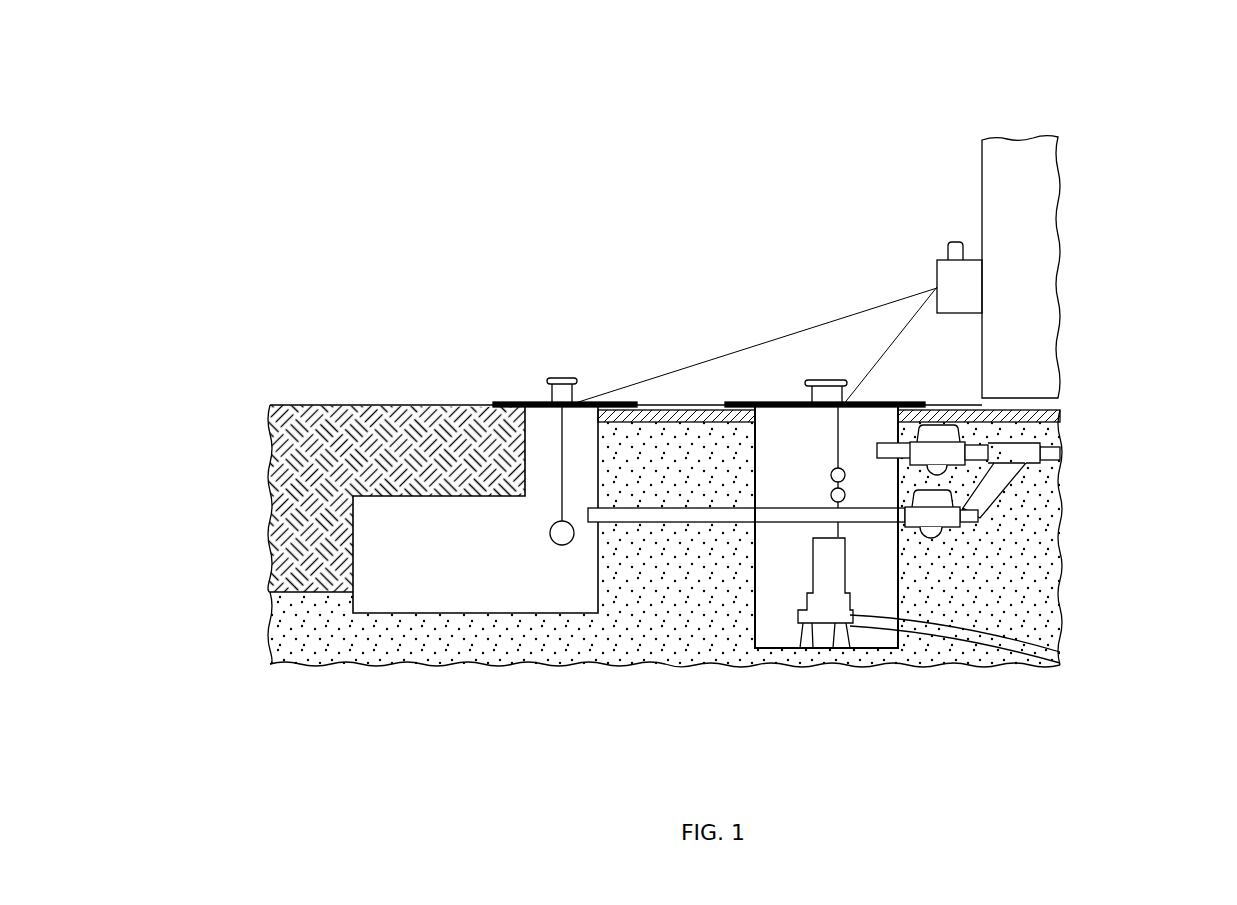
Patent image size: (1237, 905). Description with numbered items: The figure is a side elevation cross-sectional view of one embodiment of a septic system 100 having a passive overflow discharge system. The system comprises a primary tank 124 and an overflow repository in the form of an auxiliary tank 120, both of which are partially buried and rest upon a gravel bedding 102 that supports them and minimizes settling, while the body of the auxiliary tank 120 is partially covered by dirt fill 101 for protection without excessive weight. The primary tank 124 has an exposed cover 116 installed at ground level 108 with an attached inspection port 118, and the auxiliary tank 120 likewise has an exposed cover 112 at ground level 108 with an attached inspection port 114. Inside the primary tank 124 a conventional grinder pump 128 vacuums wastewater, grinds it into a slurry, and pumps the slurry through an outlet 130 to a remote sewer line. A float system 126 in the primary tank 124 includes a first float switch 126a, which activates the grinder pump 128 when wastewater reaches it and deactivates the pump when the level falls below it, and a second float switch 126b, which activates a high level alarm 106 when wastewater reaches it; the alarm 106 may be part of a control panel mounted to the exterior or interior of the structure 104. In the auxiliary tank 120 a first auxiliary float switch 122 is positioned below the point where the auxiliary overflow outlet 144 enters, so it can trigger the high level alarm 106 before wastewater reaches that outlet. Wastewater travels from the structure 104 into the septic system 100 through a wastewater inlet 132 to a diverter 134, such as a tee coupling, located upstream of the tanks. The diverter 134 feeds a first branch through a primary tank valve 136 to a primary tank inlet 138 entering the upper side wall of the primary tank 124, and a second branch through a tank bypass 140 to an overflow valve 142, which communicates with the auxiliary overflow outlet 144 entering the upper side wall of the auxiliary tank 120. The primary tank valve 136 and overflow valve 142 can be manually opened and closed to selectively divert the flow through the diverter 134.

The septic system 100 is at (507, 170).
The dirt fill 101 is at (300, 442).
The gravel bedding 102 is at (290, 623).
The structure 104 is at (1020, 172).
The high level alarm 106 is at (963, 287).
The ground level 108 is at (392, 404).
The exposed cover 112 is at (493, 402).
The inspection port 114 is at (551, 378).
The exposed cover 116 is at (725, 402).
The inspection port 118 is at (837, 378).
The auxiliary tank 120 is at (380, 600).
The first auxiliary float switch 122 is at (562, 547).
The primary tank 124 is at (782, 592).
The float system 126 is at (722, 504).
The first float switch 126a is at (838, 505).
The second float switch 126b is at (838, 468).
The grinder pump 128 is at (827, 606).
The outlet 130 is at (940, 640).
The wastewater inlet 132 is at (1060, 457).
The diverter 134 is at (1008, 457).
The primary tank valve 136 is at (940, 445).
The primary tank inlet 138 is at (887, 443).
The tank bypass 140 is at (975, 515).
The overflow valve 142 is at (930, 537).
The auxiliary overflow outlet 144 is at (643, 523).